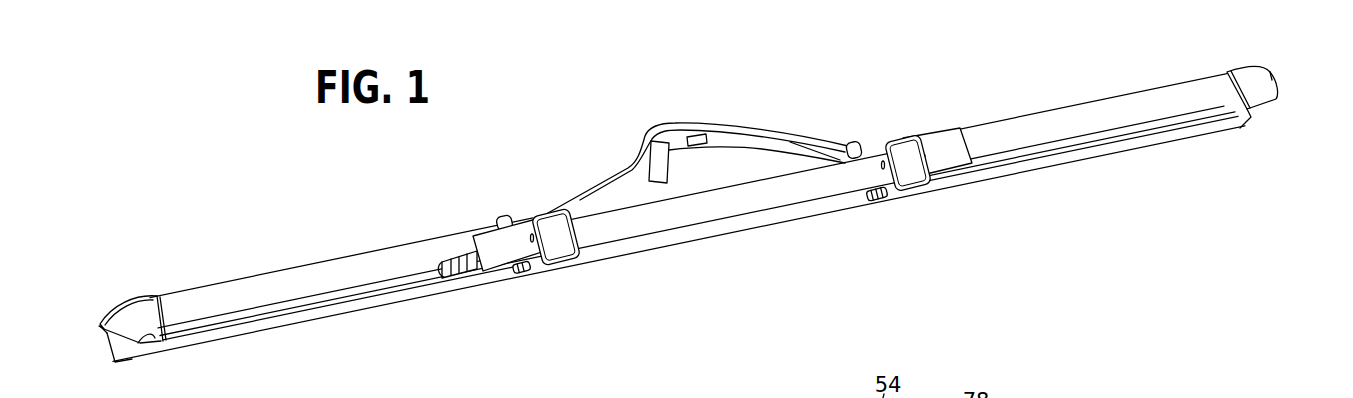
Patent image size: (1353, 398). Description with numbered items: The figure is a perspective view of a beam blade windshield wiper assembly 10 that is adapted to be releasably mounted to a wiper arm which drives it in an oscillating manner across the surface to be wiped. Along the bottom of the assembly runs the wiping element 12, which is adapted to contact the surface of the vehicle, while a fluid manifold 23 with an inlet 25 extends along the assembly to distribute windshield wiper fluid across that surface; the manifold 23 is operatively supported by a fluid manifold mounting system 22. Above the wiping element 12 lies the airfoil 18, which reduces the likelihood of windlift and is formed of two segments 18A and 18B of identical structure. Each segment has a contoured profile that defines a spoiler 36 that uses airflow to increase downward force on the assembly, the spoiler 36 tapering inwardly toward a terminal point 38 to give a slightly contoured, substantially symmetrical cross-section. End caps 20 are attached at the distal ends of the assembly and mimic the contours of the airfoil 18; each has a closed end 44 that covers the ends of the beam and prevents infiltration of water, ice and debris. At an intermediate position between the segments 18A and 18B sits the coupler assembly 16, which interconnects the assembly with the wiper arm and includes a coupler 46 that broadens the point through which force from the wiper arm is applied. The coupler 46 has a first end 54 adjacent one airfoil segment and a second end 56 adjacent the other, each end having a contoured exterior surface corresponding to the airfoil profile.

The windshield wiper assembly 10 is at (713, 100).
The wiping element 12 is at (307, 325).
The coupler assembly 16 is at (778, 125).
The airfoil 18 is at (1028, 112).
The first airfoil segment 18A is at (227, 290).
The second airfoil segment 18B is at (1127, 105).
The end cap 20 is at (143, 297).
The fluid manifold mounting system 22 is at (887, 128).
The fluid manifold 23 is at (694, 228).
The inlet 25 is at (434, 276).
The spoiler 36 is at (288, 278).
The terminal point 38 is at (385, 245).
The closed end 44 is at (143, 332).
The coupler 46 is at (642, 133).
The first end 54 is at (533, 207).
The second end 56 is at (831, 138).